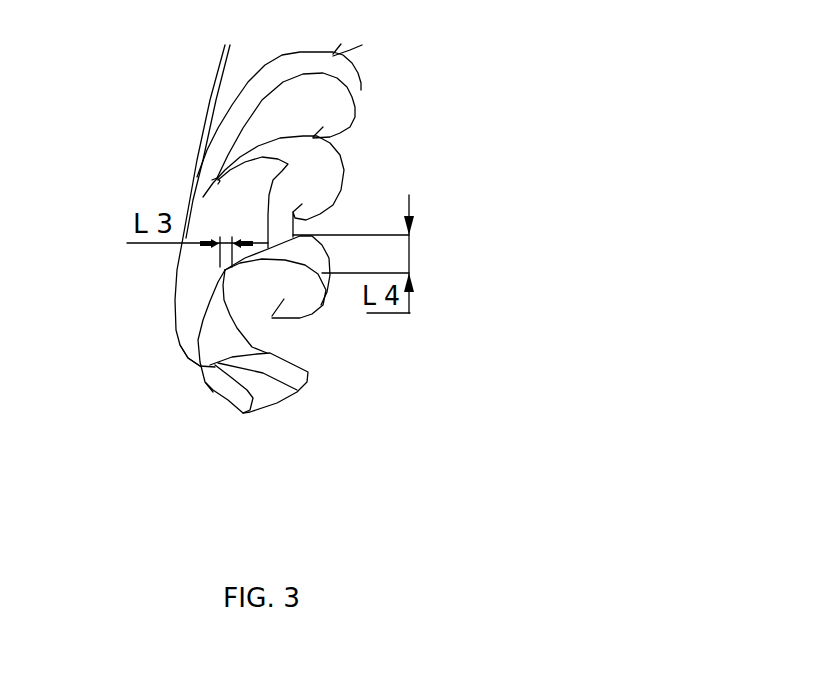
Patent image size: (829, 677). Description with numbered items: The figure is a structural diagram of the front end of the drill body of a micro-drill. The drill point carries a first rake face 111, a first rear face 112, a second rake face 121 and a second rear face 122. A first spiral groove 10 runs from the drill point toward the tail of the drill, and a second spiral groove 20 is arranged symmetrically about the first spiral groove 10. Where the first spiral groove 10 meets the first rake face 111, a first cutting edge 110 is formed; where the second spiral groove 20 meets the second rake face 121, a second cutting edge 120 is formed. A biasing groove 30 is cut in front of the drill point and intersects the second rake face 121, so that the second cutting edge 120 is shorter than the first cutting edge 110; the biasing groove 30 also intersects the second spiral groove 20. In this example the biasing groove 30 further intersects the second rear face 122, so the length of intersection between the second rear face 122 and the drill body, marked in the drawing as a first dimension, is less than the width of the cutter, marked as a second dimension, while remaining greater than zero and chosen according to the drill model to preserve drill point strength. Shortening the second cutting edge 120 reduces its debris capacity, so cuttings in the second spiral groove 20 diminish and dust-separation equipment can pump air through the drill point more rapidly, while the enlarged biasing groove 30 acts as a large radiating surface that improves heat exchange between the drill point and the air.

The first spiral groove 10 is at (327, 343).
The first cutting edge 110 is at (297, 365).
The first rake face 111 is at (297, 378).
The first rear face 112 is at (265, 400).
The second cutting edge 120 is at (210, 353).
The second rake face 121 is at (208, 355).
The second rear face 122 is at (222, 333).
The second spiral groove 20 is at (200, 401).
The biasing groove 30 is at (170, 290).